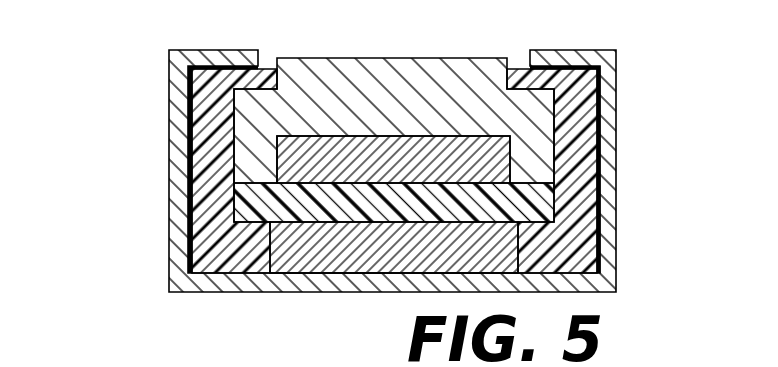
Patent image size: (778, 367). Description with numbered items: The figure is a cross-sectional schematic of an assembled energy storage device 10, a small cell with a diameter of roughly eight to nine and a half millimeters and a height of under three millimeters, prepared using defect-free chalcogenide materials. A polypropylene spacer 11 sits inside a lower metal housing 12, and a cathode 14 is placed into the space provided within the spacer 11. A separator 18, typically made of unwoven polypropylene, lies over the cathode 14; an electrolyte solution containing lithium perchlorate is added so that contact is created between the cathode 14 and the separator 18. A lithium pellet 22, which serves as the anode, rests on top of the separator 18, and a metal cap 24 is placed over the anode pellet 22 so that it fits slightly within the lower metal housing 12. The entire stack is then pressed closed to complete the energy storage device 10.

The energy storage device 10 is at (381, 163).
The polypropylene spacer 11 is at (580, 115).
The lower metal housing 12 is at (619, 228).
The cathode 14 is at (500, 252).
The separator 18 is at (515, 206).
The lithium pellet 22 is at (478, 163).
The metal cap 24 is at (393, 90).